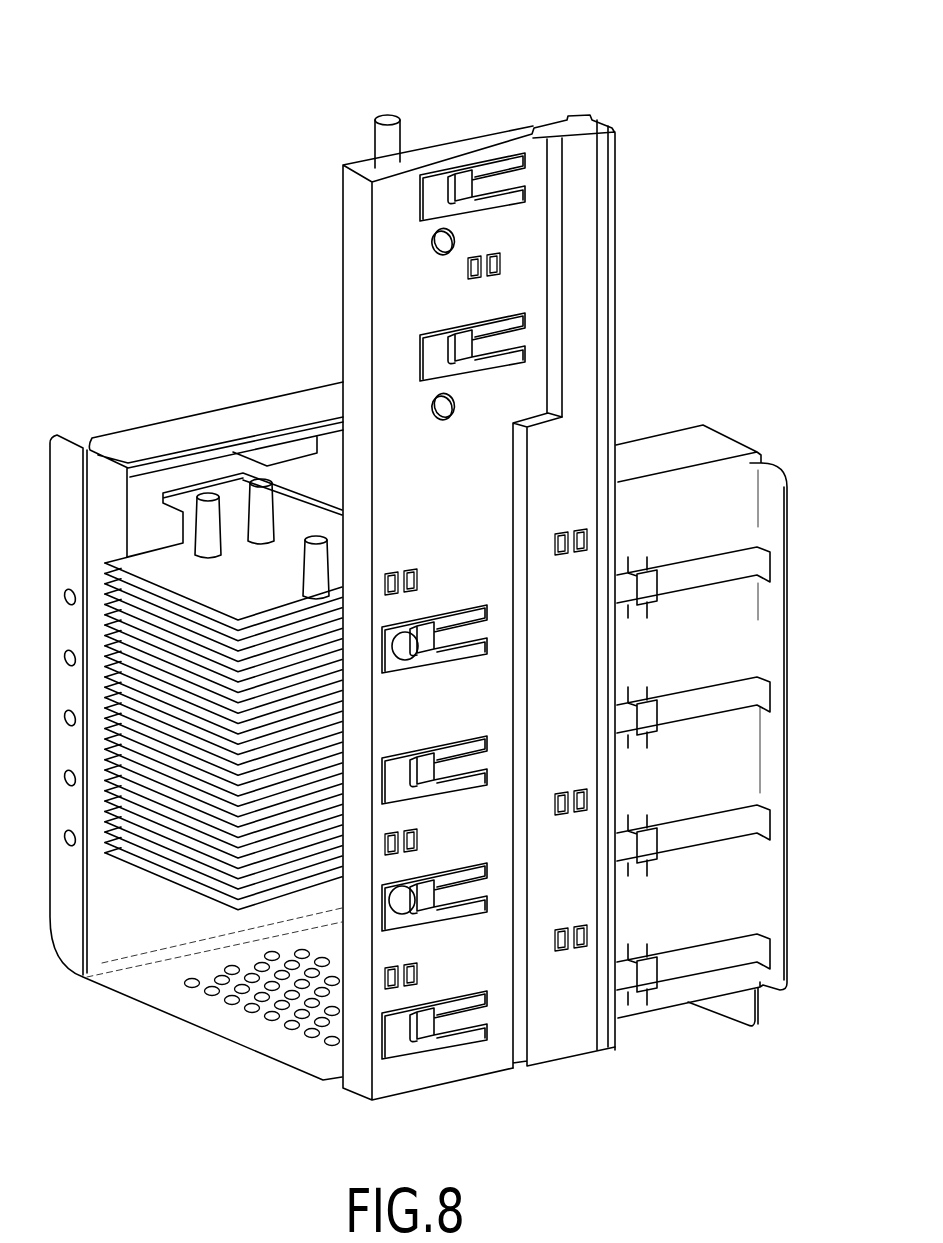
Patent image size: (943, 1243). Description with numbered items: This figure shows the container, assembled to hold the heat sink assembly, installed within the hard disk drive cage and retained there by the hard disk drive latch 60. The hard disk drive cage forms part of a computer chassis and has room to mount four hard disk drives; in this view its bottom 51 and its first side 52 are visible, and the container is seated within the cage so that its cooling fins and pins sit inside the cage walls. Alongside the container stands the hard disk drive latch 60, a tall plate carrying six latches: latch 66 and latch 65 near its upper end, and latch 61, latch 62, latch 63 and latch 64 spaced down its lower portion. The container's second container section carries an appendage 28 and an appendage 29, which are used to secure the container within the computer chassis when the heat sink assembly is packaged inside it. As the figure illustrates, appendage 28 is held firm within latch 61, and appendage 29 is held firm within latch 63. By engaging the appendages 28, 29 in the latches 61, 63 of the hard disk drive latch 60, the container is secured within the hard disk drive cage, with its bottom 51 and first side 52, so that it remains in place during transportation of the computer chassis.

The hard disk drive latch 60 is at (557, 128).
The latch 66 is at (463, 197).
The latch 65 is at (465, 358).
The latch 61 is at (445, 647).
The latch 62 is at (440, 770).
The latch 63 is at (453, 890).
The latch 64 is at (432, 1023).
The appendage 28 is at (407, 645).
The appendage 29 is at (420, 900).
The first side 52 is at (728, 500).
The bottom 51 is at (730, 1010).